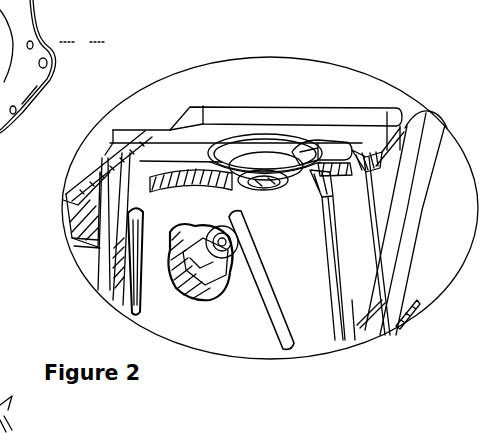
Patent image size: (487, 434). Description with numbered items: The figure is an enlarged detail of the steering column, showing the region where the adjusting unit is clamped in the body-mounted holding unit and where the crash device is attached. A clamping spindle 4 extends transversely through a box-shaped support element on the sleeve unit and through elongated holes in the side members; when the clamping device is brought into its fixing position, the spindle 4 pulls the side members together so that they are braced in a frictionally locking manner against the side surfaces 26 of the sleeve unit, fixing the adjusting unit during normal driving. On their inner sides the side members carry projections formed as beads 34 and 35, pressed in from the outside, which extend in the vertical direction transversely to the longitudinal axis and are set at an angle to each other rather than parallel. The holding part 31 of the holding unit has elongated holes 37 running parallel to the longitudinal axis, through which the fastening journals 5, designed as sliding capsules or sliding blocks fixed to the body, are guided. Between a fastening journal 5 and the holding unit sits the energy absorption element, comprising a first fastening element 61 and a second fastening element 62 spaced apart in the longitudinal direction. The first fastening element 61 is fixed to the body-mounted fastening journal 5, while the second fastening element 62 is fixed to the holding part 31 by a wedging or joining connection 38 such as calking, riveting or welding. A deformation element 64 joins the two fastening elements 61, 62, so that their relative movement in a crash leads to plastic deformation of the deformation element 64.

The clamping spindle 4 is at (210, 292).
The fastening journal 5 is at (270, 194).
The side surfaces 26 is at (73, 247).
The holding part 31 is at (328, 113).
The bead 34 is at (102, 296).
The bead 35 is at (280, 351).
The elongated holes 37 is at (80, 176).
The wedging or joining connection 38 is at (385, 148).
The first fastening element 61 is at (233, 117).
The second fastening element 62 is at (370, 158).
The deformation element 64 is at (356, 270).